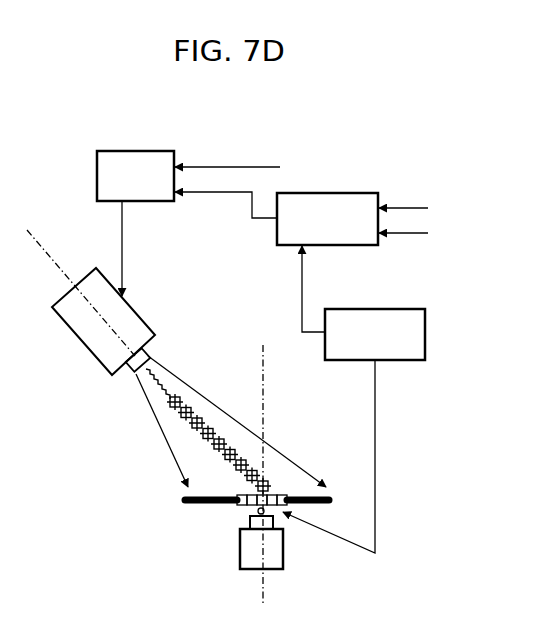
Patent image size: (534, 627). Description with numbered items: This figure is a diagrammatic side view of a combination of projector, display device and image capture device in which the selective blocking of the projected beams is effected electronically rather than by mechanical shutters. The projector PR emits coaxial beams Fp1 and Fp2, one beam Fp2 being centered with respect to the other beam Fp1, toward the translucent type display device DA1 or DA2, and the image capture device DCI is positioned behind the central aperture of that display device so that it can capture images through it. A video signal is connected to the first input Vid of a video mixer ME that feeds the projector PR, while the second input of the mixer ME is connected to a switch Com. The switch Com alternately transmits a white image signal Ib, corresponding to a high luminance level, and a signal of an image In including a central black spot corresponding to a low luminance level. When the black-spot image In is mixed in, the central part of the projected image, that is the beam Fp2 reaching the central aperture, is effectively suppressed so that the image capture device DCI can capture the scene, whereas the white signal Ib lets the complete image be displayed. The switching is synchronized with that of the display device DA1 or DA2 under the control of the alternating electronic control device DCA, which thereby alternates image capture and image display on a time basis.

The video mixer ME is at (125, 151).
The first input Vid is at (234, 165).
The switch Com is at (323, 191).
The white image signal Ib is at (397, 207).
The image signal with central black spot In is at (397, 233).
The alternating electronic control device DCA is at (397, 361).
The projector PR is at (79, 339).
The first beam Fp1 is at (158, 402).
The second beam Fp2 is at (193, 427).
The first display device DA1 is at (202, 512).
The second display device DA2 is at (298, 500).
The image capture device DCI is at (272, 569).